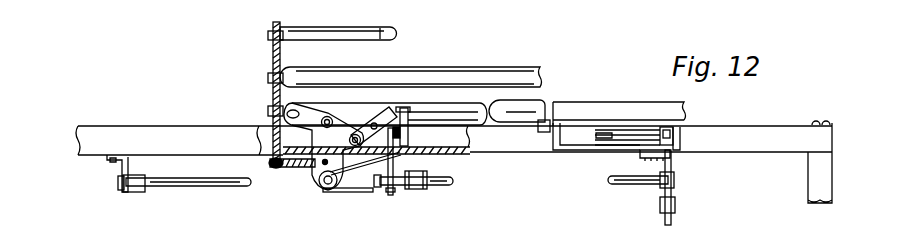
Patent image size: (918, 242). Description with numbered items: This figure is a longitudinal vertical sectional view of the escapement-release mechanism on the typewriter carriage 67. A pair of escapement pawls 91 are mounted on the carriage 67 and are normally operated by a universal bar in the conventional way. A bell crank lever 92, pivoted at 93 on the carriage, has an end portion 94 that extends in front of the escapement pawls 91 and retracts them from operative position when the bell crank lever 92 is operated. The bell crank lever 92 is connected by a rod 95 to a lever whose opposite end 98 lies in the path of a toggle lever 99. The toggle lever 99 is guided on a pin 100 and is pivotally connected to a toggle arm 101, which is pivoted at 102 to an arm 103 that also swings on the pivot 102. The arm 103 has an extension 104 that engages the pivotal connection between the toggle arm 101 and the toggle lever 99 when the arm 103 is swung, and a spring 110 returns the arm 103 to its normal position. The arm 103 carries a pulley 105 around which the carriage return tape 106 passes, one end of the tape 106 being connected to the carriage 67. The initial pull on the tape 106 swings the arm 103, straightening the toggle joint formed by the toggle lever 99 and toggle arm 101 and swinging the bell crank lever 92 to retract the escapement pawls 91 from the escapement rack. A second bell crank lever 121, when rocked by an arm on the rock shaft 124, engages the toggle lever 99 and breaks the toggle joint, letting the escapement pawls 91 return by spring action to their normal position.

The carriage 67 is at (282, 52).
The escapement pawls 91 is at (612, 132).
The bell crank lever 92 is at (579, 151).
The pivot 93 is at (540, 132).
The end portion 94 is at (617, 137).
The rod 95 is at (536, 110).
The end of lever 98 is at (404, 110).
The toggle lever 99 is at (358, 135).
The pin 100 is at (386, 107).
The toggle arm 101 is at (342, 127).
The pivot 102 is at (326, 117).
The arm 103 is at (324, 168).
The extension 104 is at (363, 160).
The pulley 105 is at (324, 191).
The tape 106 is at (364, 193).
The spring 110 is at (292, 170).
The bell crank lever 121 is at (394, 192).
The rock shaft 124 is at (187, 190).